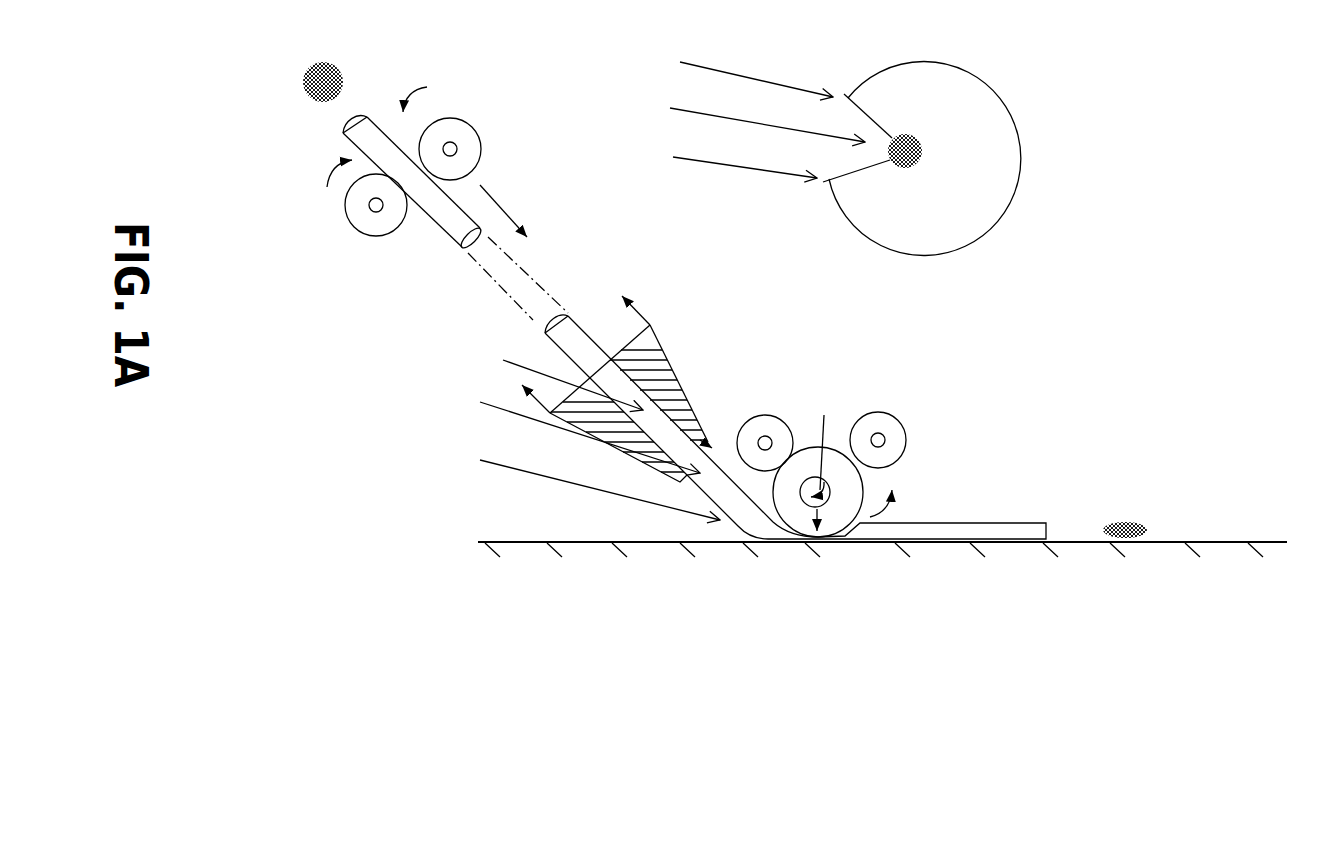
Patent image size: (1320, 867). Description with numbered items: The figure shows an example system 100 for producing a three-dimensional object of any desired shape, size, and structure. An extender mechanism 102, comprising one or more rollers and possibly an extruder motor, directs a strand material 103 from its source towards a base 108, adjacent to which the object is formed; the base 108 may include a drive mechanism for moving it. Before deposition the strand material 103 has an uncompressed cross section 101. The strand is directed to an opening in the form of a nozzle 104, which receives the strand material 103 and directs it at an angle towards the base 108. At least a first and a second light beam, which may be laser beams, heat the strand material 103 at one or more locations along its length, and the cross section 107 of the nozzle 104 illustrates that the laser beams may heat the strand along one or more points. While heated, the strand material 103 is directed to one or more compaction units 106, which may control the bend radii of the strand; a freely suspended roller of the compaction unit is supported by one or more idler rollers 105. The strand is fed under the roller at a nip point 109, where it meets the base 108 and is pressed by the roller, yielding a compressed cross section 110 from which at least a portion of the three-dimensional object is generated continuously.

The system 100 is at (783, 321).
The uncompressed cross section 101 is at (345, 78).
The extender mechanism 102 is at (353, 227).
The strand material 103 is at (552, 273).
The nozzle 104 is at (703, 450).
The idler rollers 105 is at (898, 422).
The compaction units 106 is at (863, 477).
The cross section of the nozzle 107 is at (1030, 148).
The base 108 is at (673, 560).
The nip point 109 is at (822, 548).
The compressed cross section 110 is at (1125, 522).